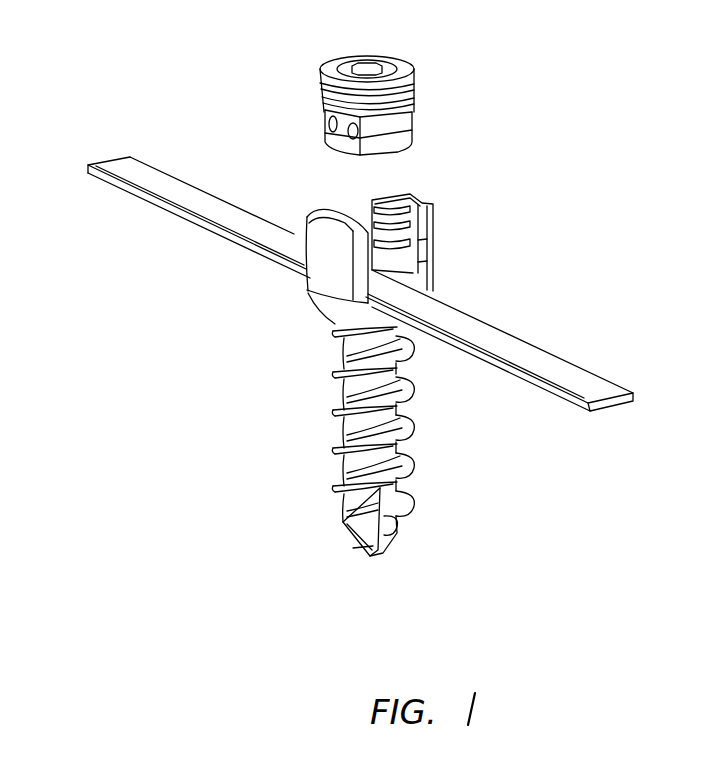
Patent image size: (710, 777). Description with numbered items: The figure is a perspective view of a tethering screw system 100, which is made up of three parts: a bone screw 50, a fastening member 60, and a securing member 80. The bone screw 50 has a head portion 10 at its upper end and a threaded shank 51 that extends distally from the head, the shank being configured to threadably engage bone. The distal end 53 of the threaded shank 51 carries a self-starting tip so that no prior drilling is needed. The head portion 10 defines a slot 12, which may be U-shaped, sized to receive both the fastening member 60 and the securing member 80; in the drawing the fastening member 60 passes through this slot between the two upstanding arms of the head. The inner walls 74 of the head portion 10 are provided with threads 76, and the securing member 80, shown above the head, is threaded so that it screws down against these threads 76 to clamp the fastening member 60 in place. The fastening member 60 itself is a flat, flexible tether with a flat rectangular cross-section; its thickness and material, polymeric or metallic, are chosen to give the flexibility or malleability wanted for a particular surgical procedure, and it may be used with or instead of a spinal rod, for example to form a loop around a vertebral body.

The tethering screw system 100 is at (186, 87).
The securing member 80 is at (436, 92).
The fastening member 60 is at (573, 358).
The bone screw 50 is at (422, 440).
The screw head 10 is at (432, 212).
The head arm 12 is at (352, 212).
The inner walls 74 is at (393, 195).
The threads 76 is at (430, 283).
The threaded shank 51 is at (330, 414).
The distal end 53 is at (378, 556).